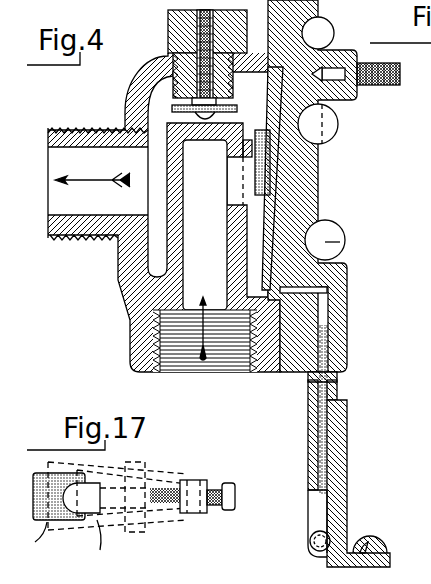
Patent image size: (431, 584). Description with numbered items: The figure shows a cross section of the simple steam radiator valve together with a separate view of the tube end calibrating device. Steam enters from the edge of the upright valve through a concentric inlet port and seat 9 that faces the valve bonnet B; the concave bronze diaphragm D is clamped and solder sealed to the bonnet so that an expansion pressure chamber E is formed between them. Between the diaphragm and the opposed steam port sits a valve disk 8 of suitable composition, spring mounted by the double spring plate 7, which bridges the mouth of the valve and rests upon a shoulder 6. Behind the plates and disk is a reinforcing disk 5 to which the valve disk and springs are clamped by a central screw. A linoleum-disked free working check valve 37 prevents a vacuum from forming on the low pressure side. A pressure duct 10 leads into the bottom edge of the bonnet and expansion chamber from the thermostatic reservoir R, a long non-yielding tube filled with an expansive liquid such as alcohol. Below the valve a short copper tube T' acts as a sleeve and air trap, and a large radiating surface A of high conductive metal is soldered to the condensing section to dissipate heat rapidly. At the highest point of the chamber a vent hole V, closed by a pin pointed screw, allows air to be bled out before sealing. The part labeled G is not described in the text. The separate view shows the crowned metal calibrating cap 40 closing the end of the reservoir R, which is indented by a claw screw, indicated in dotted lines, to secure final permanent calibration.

In FIG. 4, the vent hole V is at (328, 50).
In FIG. 4, the reinforcing disk 5 is at (283, 175).
In FIG. 4, the valve bonnet B is at (312, 168).
In FIG. 4, the expansion pressure chamber E is at (294, 188).
In FIG. 4, the concave bronze diaphragm D is at (275, 240).
In FIG. 4, the shoulder 6 is at (270, 72).
In FIG. 4, the check valve 37 is at (232, 109).
In FIG. 4, the inlet port and seat 9 is at (243, 163).
In FIG. 4, the valve disk 8 is at (262, 228).
In FIG. 4, the double spring plate 7 is at (262, 257).
In FIG. 4, the pressure duct 10 is at (343, 293).
In FIG. 4, the guide G is at (332, 378).
In FIG. 4, the copper tube T' is at (341, 410).
In FIG. 4, the radiating surface A is at (346, 470).
In FIG. 17, the thermostatic liquid reservoir R is at (66, 524).
In FIG. 17, the calibrating cap 40 is at (141, 519).